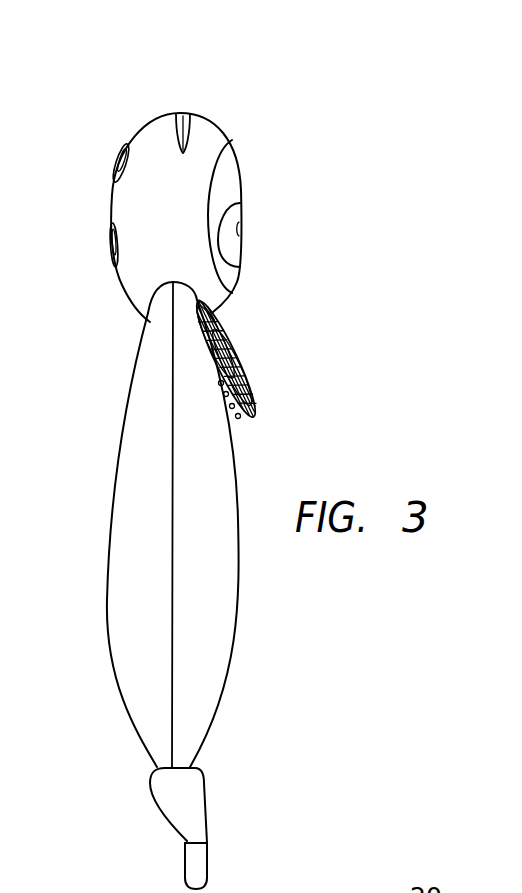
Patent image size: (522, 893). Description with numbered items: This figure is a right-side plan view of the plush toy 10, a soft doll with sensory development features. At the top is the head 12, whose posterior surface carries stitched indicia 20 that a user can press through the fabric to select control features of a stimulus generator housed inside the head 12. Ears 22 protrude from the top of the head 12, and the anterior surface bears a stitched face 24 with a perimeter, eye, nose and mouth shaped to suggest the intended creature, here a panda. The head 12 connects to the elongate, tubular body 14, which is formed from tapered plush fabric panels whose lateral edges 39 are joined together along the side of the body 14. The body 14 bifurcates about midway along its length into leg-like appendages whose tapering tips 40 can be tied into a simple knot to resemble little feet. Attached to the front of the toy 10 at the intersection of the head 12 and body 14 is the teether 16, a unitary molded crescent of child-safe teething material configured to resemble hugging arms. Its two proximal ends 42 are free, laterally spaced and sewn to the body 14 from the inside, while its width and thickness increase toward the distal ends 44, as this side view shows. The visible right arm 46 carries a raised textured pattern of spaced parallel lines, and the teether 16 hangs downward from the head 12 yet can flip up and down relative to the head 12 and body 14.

The plush toy 10 is at (247, 100).
The head 12 is at (143, 120).
The body 14 is at (115, 455).
The teether 16 is at (232, 352).
The indicia 20 is at (118, 155).
The ears 22 is at (178, 118).
The face 24 is at (230, 177).
The lateral edges 39 is at (172, 563).
The tips 40 is at (172, 795).
The proximal ends 42 is at (197, 300).
The distal ends 44 is at (250, 420).
The right arm 46 is at (213, 313).